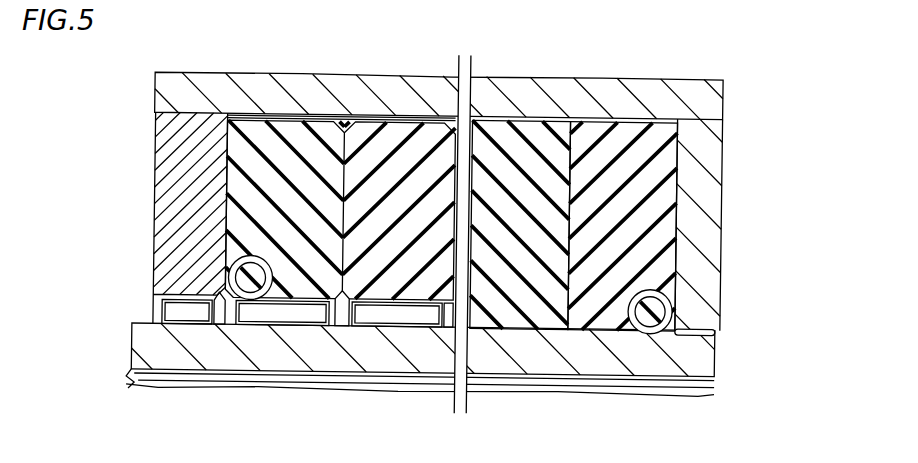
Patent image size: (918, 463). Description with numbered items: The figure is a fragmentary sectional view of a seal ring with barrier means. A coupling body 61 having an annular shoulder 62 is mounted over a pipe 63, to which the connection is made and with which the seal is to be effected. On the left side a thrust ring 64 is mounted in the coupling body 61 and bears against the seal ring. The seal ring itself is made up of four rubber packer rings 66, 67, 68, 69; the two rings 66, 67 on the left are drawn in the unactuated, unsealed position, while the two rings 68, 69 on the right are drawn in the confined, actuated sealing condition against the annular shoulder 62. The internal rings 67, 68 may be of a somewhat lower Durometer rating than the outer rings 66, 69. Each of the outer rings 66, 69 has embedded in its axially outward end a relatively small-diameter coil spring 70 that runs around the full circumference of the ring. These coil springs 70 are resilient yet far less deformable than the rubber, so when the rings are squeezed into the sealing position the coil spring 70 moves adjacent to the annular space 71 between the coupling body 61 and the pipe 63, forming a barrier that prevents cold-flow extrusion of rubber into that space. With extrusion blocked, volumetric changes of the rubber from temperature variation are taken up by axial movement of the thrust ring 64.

The coupling body 61 is at (581, 91).
The annular shoulder 62 is at (676, 219).
The pipe 63 is at (529, 359).
The thrust ring 64 is at (164, 209).
The packer ring 66 is at (282, 144).
The packer ring 67 is at (397, 146).
The packer ring 68 is at (519, 137).
The packer ring 69 is at (616, 138).
The coil spring 70 is at (254, 292).
The annular space 71 is at (716, 327).